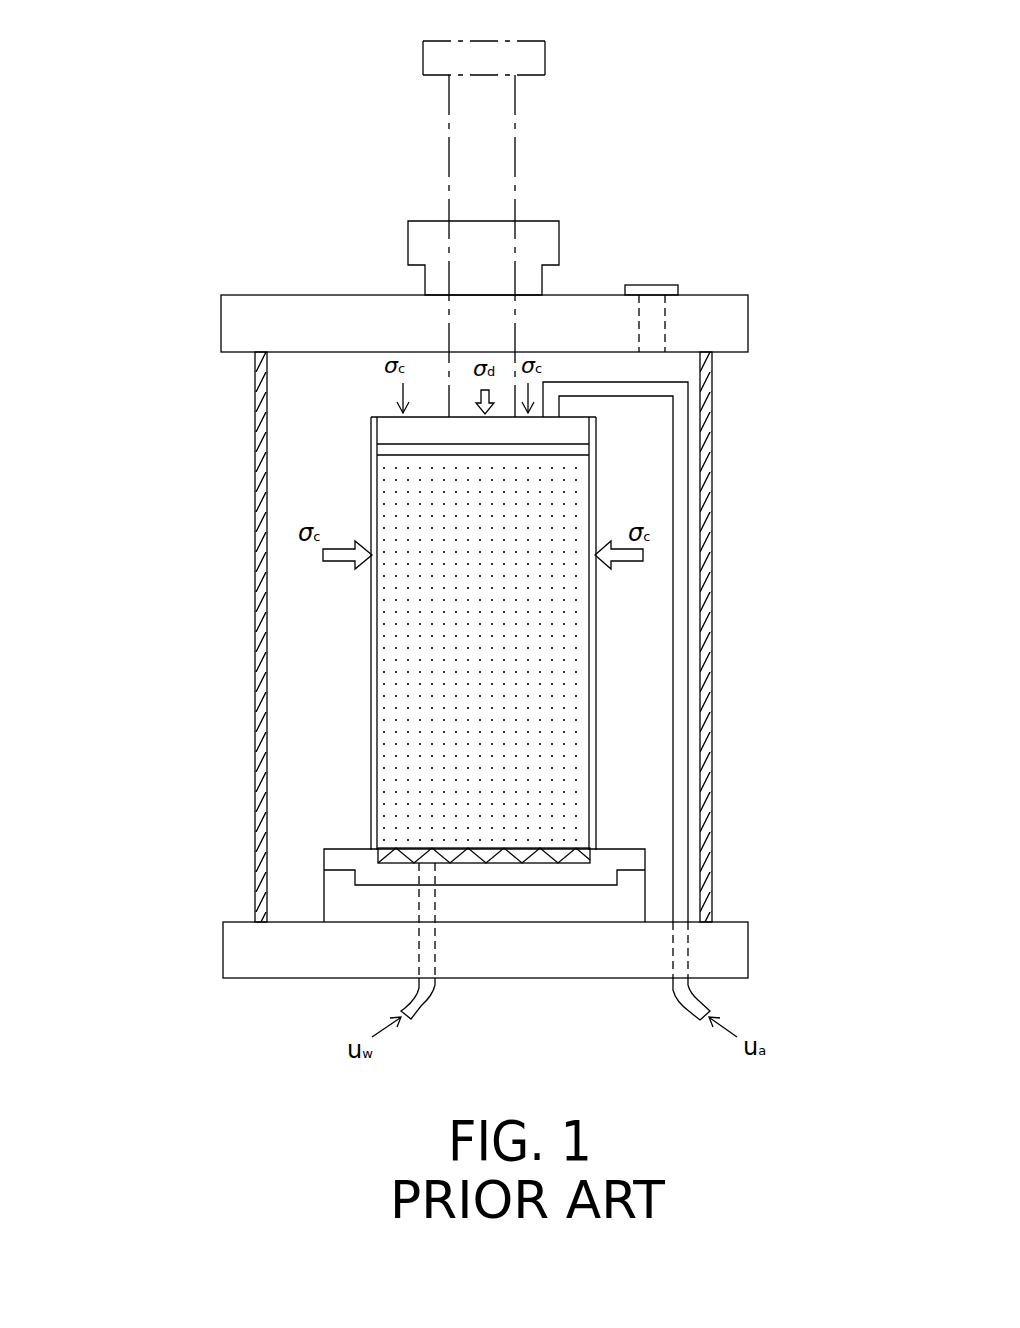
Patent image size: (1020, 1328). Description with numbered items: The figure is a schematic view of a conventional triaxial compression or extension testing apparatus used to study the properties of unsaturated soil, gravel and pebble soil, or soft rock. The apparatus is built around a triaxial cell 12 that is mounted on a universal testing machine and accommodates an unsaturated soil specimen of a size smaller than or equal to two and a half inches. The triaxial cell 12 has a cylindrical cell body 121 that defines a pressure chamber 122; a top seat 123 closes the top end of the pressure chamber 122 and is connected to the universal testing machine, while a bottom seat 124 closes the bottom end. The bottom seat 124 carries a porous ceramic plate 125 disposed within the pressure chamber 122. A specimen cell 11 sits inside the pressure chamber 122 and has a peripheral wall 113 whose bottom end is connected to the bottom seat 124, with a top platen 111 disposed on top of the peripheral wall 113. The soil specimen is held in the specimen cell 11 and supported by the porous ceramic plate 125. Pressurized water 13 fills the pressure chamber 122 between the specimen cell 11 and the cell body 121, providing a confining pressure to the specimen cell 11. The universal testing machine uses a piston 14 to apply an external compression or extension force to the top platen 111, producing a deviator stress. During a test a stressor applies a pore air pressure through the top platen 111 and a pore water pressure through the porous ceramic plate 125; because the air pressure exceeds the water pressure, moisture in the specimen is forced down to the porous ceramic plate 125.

The specimen cell 11 is at (597, 594).
The triaxial cell 12 is at (748, 320).
The pressurized water 13 is at (418, 701).
The piston 14 is at (500, 170).
The top platen 111 is at (407, 444).
The peripheral wall 113 is at (596, 652).
The cylindrical cell body 121 is at (256, 400).
The pressure chamber 122 is at (300, 628).
The top seat 123 is at (238, 323).
The bottom seat 124 is at (243, 950).
The porous ceramic plate 125 is at (380, 855).